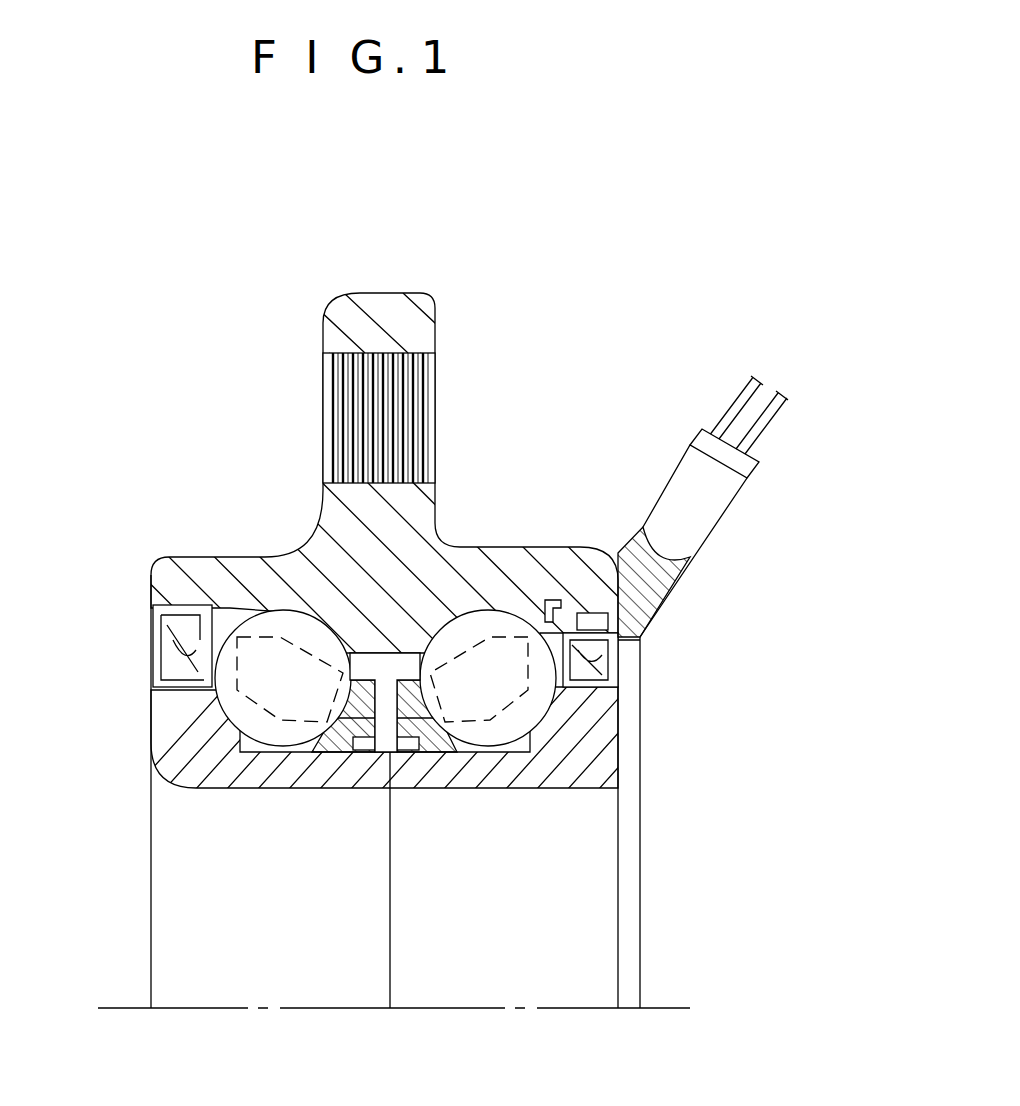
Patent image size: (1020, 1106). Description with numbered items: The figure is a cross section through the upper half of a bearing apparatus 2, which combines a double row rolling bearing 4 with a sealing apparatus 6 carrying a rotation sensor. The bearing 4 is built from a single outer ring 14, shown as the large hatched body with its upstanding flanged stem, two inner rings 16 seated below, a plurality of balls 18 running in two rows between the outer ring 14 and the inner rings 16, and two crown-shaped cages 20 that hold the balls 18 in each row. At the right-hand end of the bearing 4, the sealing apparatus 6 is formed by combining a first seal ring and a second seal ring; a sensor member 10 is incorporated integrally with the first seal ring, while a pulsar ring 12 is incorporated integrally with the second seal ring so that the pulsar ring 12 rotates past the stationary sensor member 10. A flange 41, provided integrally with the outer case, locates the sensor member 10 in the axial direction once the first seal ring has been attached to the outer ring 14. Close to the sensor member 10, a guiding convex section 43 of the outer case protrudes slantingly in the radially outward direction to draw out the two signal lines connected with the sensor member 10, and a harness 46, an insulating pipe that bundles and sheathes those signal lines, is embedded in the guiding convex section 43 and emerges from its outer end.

The bearing apparatus 2 is at (597, 386).
The double row rolling bearing 4 is at (185, 553).
The sealing apparatus 6 is at (515, 598).
The sensor member 10 is at (587, 614).
The pulsar ring 12 is at (641, 658).
The outer ring 14 is at (292, 565).
The inner rings 16 is at (603, 757).
The balls 18 is at (255, 716).
The crown-shaped cages 20 is at (420, 752).
The flange 41 is at (627, 527).
The guiding convex section 43 is at (695, 530).
The harness 46 is at (750, 477).